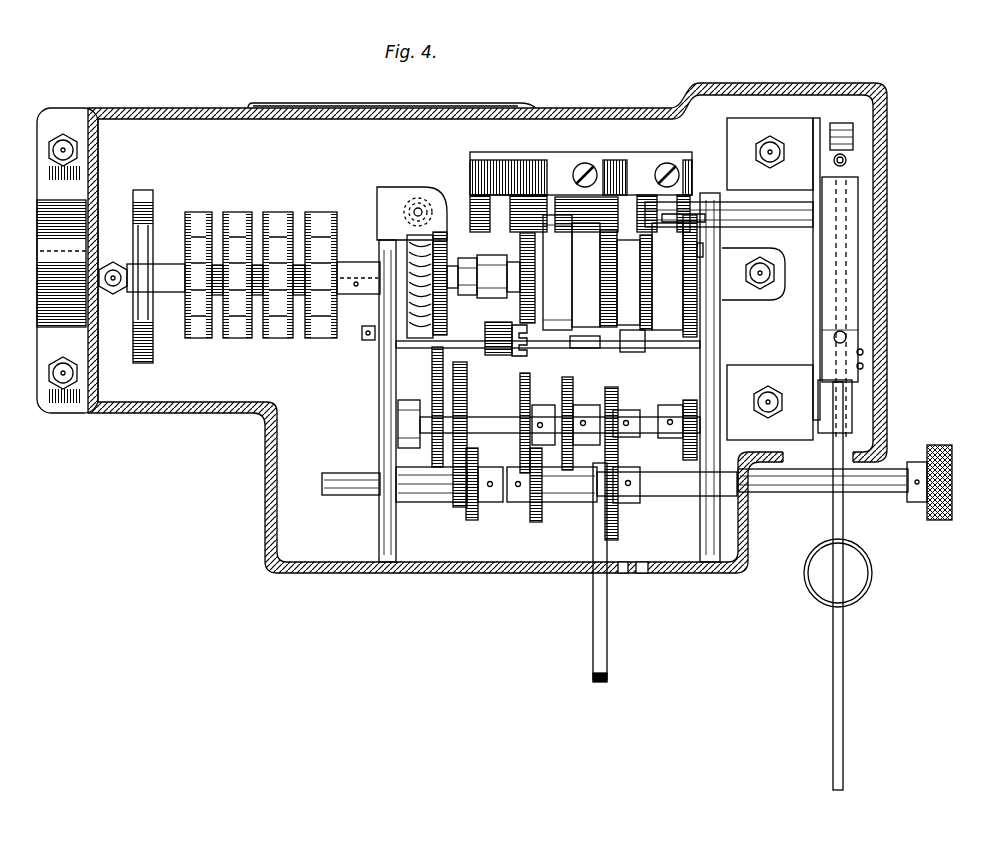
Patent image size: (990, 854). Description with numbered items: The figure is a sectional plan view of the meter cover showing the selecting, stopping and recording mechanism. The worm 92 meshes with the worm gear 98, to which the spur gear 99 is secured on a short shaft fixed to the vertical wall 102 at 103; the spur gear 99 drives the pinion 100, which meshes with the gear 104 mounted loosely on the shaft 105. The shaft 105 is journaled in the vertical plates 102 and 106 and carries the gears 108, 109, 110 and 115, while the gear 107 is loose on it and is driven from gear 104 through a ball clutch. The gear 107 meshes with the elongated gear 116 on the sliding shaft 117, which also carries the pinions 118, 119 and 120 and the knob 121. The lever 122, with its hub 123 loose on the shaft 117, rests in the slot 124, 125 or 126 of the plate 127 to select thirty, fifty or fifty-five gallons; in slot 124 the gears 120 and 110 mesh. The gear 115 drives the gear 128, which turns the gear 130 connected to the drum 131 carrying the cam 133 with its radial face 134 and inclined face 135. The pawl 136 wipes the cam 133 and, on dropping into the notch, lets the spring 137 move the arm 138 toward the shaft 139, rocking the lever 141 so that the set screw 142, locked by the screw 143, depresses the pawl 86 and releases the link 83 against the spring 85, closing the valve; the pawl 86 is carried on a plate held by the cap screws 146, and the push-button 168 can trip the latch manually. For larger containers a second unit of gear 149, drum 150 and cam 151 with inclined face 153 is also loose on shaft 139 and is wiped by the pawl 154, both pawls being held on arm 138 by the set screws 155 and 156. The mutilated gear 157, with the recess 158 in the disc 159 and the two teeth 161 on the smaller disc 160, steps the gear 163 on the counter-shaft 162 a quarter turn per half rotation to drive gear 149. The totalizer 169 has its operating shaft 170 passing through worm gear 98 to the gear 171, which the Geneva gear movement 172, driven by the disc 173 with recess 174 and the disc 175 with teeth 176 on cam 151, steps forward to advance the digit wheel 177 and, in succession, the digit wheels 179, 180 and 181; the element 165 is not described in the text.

The link 83 is at (845, 690).
The spring 85 is at (848, 162).
The pawl 86 is at (856, 396).
The worm 92 is at (418, 206).
The worm gear 98 is at (403, 240).
The spur gear 99 is at (443, 237).
The pinion 100 is at (434, 328).
The vertical wall 102 is at (380, 390).
The mounting of short shaft 103 is at (363, 335).
The gear 104 is at (433, 385).
The shaft 105 is at (625, 412).
The vertical plate 106 is at (712, 318).
The gear 107 is at (466, 395).
The gear 108 is at (524, 394).
The gear 109 is at (578, 492).
The gear 110 is at (620, 455).
The gear 115 is at (688, 465).
The elongated gear 116 is at (398, 562).
The sliding shaft 117 is at (794, 492).
The pinion 118 is at (472, 521).
The pinion 119 is at (533, 524).
The pinion 120 is at (612, 538).
The knob 121 is at (940, 445).
The lever 122 is at (593, 648).
The hub 123 is at (583, 500).
The slot 124 is at (588, 575).
The slot 125 is at (622, 570).
The slot 126 is at (643, 572).
The plate 127 is at (388, 574).
The gear 128 is at (722, 372).
The gear 130 is at (703, 252).
The drum 131 is at (670, 217).
The cam 133 is at (668, 170).
The radial face 134 is at (640, 286).
The inclined face 135 is at (640, 260).
The pawl 136 is at (648, 232).
The spring 137 is at (520, 197).
The arm 138 is at (470, 172).
The shaft 139 is at (725, 272).
The lever 141 is at (852, 255).
The set screw 142 is at (846, 335).
The screw 143 is at (863, 364).
The cap screws 146 is at (780, 142).
The gear 149 is at (641, 227).
The drum 150 is at (589, 275).
The cam 151 is at (545, 215).
The inclined face 153 is at (557, 272).
The pawl 154 is at (552, 185).
The set screw 155 is at (670, 200).
The set screw 156 is at (590, 174).
The mutilated gear 157 is at (591, 256).
The recess 158 is at (640, 272).
The disc 159 is at (653, 332).
The disc 160 is at (795, 209).
The gear teeth 161 is at (591, 274).
The counter-shaft 162 is at (568, 348).
The gear 163 is at (638, 352).
The plate 165 is at (818, 200).
The push-button 168 is at (874, 573).
The totalizer 169 is at (239, 352).
The operating shaft 170 is at (348, 237).
The gear 171 is at (512, 305).
The Geneva gear movement 172 is at (515, 357).
The disc 173 is at (495, 247).
The recess 174 is at (484, 276).
The disc 175 is at (556, 288).
The teeth 176 is at (504, 274).
The digit wheel 177 is at (313, 340).
The digit wheel 179 is at (275, 340).
The digit wheel 180 is at (228, 340).
The digit wheel 181 is at (187, 340).